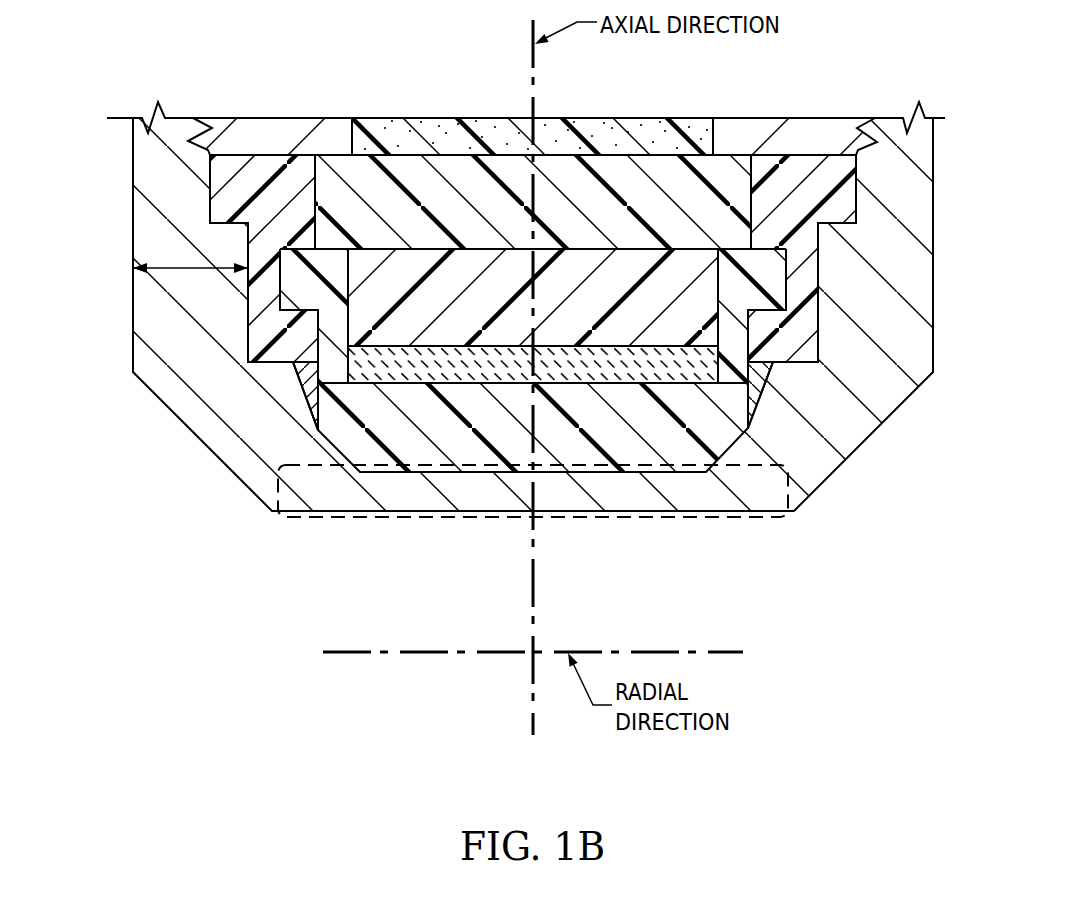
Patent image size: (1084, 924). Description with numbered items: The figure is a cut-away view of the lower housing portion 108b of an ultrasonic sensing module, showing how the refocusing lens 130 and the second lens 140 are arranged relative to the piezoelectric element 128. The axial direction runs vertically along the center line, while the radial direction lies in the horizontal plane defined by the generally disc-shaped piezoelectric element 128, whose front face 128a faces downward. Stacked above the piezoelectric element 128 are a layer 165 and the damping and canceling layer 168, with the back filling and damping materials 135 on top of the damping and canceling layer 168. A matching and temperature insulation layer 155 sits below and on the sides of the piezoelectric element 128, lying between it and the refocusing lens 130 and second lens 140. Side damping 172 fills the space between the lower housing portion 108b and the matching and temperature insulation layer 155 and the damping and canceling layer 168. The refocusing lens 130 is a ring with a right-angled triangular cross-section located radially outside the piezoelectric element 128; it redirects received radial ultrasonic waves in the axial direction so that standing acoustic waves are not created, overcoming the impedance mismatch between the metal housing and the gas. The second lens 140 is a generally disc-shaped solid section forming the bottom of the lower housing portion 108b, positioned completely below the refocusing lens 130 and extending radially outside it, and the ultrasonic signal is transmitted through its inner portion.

The lower housing portion 108b is at (142, 235).
The side damping 172 is at (262, 170).
The back filling and damping materials 135 is at (441, 125).
The damping and canceling layer 168 is at (627, 178).
The layer 165 is at (418, 260).
The matching and temperature insulation layer 155 is at (690, 457).
The piezoelectric element 128 is at (664, 375).
The front face 128a is at (458, 377).
The refocusing lens 130 is at (295, 373).
The second lens 140 is at (335, 518).